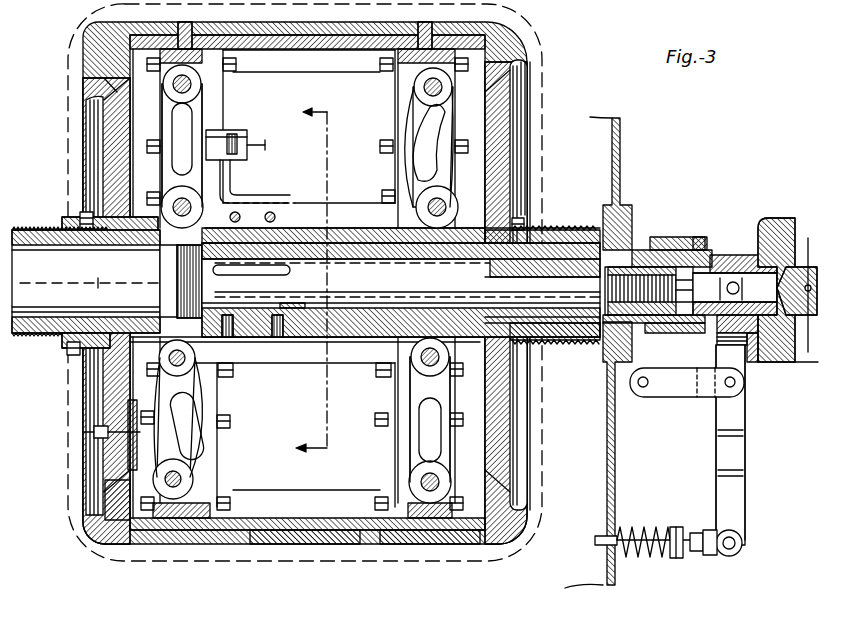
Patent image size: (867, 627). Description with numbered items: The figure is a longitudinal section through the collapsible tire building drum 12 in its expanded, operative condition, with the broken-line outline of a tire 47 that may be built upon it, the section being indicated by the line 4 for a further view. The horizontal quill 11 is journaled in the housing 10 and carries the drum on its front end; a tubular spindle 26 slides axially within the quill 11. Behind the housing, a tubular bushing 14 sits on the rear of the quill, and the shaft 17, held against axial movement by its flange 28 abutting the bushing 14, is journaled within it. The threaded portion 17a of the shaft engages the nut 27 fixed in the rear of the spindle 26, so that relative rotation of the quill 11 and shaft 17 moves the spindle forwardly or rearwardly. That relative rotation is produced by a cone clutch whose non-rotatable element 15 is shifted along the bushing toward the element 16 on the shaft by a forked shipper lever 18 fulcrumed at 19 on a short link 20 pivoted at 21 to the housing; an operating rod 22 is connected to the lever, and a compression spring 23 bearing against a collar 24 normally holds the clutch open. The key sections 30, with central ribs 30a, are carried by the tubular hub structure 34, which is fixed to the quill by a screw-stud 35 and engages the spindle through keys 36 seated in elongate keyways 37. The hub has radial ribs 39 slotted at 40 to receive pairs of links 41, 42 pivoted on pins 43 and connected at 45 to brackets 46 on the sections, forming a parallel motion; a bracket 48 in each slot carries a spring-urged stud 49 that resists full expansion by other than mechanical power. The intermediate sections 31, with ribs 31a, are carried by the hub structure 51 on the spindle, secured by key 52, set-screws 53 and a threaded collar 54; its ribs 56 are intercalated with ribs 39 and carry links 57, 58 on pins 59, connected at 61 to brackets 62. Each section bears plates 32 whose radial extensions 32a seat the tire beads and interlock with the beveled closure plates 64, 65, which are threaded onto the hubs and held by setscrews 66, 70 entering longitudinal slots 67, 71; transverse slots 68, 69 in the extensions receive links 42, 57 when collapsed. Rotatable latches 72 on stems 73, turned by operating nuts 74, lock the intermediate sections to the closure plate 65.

The section line 4 is at (320, 282).
The housing 10 is at (620, 165).
The sleeve or quill 11 is at (556, 250).
The collapsible tire building drum 12 is at (357, 550).
The tubular bushing 14 is at (702, 240).
The non-rotatable clutch element 15 is at (758, 235).
The clutch element 16 is at (803, 243).
The shaft 17 is at (798, 333).
The threads 17a is at (640, 275).
The forked shipper lever 18 is at (742, 476).
The fulcrum 19 is at (733, 386).
The short link 20 is at (701, 393).
The pivot 21 is at (645, 386).
The operating rod 22 is at (598, 546).
The compression spring 23 is at (648, 556).
The collar 24 is at (680, 560).
The tubular spindle 26 is at (566, 342).
The nut 27 is at (672, 330).
The flange 28 is at (685, 264).
The key sections 30 is at (270, 52).
The central laterally undercut rib 30a is at (288, 35).
The intermediate sections 31 is at (245, 518).
The central laterally undercut rib 31a is at (300, 548).
The plates 32 is at (262, 30).
The angular lateral extensions 32a is at (104, 86).
The hub structure 34 is at (366, 228).
The screw-stud 35 is at (495, 380).
The keys 36 is at (318, 240).
The keyways 37 is at (590, 245).
The radially disposed ribs 39 is at (278, 226).
The radial slot 40 is at (340, 224).
The link 41 is at (165, 122).
The link 42 is at (440, 120).
The pivot pins 43 is at (175, 200).
The pivotal connections 45 is at (173, 86).
The brackets 46 is at (185, 48).
The tire outline 47 is at (230, 562).
The bracket 48 is at (240, 175).
The axially movable stud 49 is at (210, 128).
The hub structure 51 is at (232, 342).
The key 52 is at (280, 345).
The set-screws 53 is at (242, 368).
The collar or flange 54 is at (177, 290).
The radially disposed ribs 56 is at (104, 345).
The link 57 is at (206, 445).
The link 58 is at (412, 440).
The pivot pins 59 is at (182, 364).
The pivotal connections 61 is at (175, 488).
The brackets 62 is at (172, 518).
The closure plate 64 is at (515, 434).
The closure plate 65 is at (112, 135).
The setscrew 66 is at (522, 213).
The longitudinal slots 67 is at (526, 222).
The transverse slots 68 is at (490, 92).
The transverse slots 69 is at (84, 515).
The set-screw 70 is at (78, 213).
The longitudinal slots 71 is at (30, 228).
The rotatable latch members 72 is at (95, 406).
The stems 73 is at (118, 460).
The operating nuts 74 is at (90, 432).